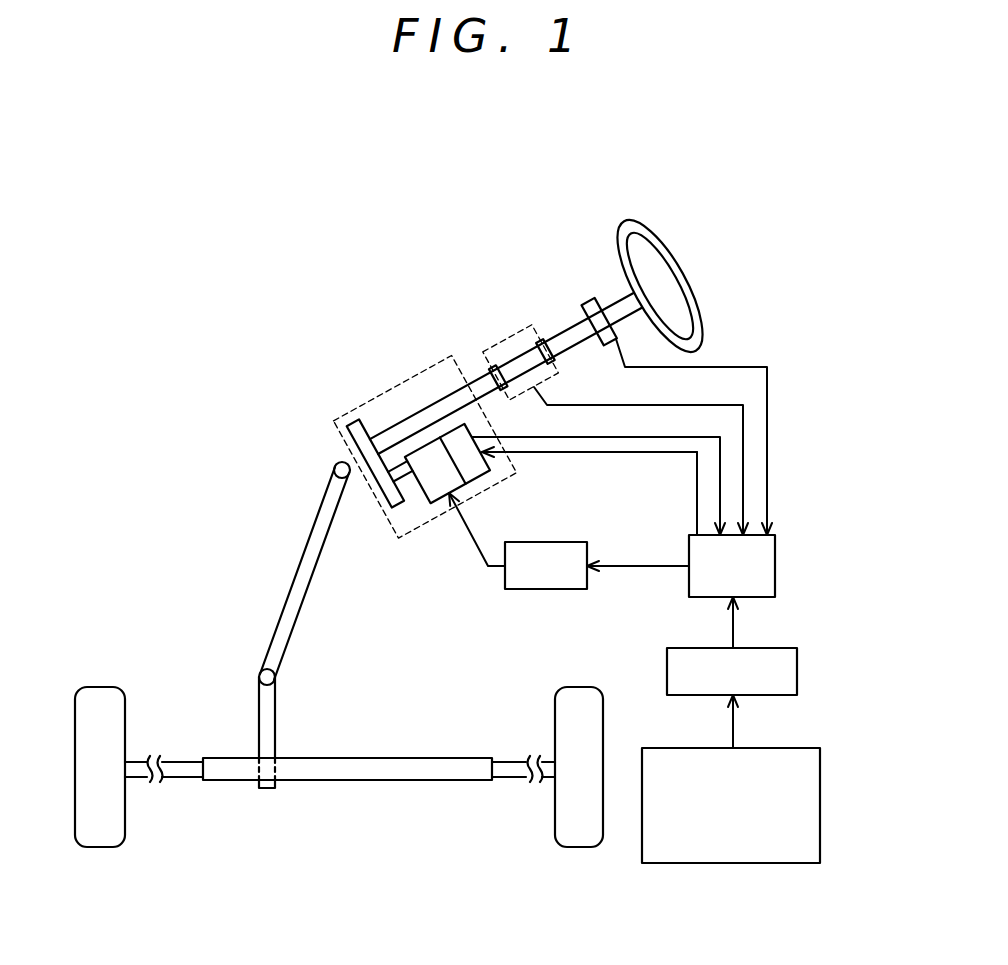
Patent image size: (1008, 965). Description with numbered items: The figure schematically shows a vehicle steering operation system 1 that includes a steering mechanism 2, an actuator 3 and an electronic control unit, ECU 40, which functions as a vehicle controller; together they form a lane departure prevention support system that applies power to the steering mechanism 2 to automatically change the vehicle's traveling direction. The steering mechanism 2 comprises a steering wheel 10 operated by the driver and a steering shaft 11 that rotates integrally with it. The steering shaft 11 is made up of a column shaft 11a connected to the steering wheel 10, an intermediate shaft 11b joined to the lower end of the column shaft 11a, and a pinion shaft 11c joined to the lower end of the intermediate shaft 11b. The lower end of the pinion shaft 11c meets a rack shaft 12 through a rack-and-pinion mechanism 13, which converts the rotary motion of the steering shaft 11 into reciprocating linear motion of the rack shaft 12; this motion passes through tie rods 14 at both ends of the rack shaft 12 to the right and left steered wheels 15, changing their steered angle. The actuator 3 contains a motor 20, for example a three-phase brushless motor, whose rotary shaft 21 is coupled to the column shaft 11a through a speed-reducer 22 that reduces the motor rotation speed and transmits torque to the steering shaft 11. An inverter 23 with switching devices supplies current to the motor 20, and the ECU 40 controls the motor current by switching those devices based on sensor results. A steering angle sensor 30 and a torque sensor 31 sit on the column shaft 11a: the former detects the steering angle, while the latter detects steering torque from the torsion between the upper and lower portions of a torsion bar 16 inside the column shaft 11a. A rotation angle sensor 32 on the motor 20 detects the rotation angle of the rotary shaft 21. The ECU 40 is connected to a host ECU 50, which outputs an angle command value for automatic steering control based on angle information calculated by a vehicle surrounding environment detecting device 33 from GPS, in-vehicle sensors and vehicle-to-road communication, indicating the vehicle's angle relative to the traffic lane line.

The vehicle steering operation system 1 is at (138, 327).
The steering mechanism 2 is at (173, 477).
The actuator 3 is at (380, 394).
The steering wheel 10 is at (688, 283).
The steering shaft 11 is at (250, 446).
The column shaft 11a is at (334, 470).
The intermediate shaft 11b is at (300, 566).
The pinion shaft 11c is at (259, 685).
The rack shaft 12 is at (417, 782).
The rack-and-pinion mechanism 13 is at (248, 750).
The tie rod 14 is at (185, 779).
The steered wheel 15 is at (97, 848).
The torsion bar 16 is at (512, 363).
The motor 20 is at (447, 494).
The rotary shaft 21 is at (410, 487).
The speed-reducer 22 is at (388, 493).
The inverter 23 is at (570, 542).
The steering angle sensor 30 is at (590, 298).
The torque sensor 31 is at (521, 328).
The rotation angle sensor 32 is at (492, 477).
The vehicle surrounding environment detecting device 33 is at (821, 808).
The electronic control unit 40 is at (776, 566).
The host electronic control unit 50 is at (798, 672).